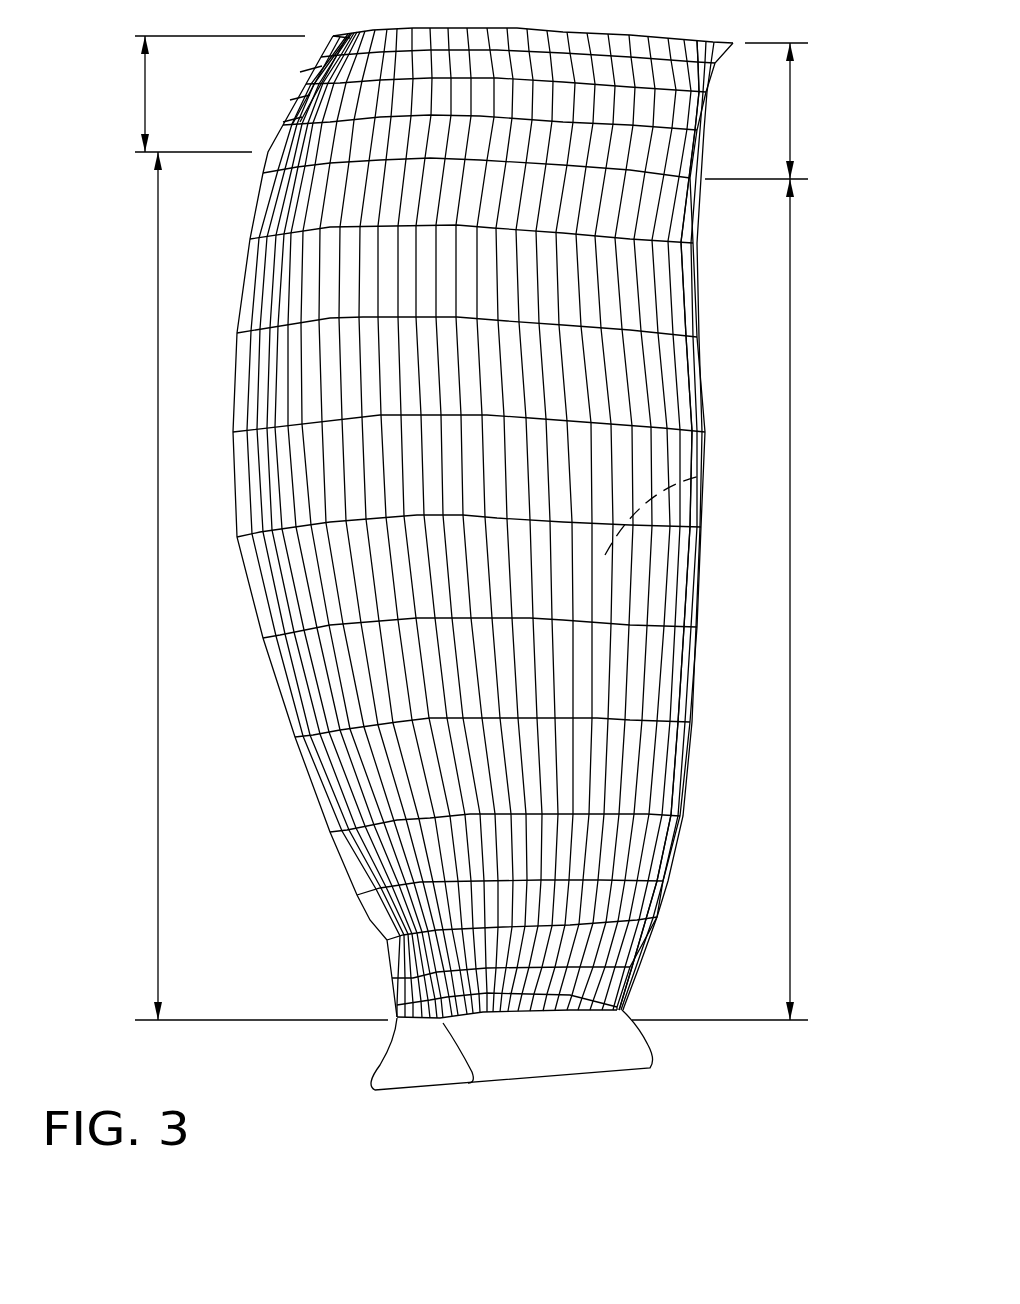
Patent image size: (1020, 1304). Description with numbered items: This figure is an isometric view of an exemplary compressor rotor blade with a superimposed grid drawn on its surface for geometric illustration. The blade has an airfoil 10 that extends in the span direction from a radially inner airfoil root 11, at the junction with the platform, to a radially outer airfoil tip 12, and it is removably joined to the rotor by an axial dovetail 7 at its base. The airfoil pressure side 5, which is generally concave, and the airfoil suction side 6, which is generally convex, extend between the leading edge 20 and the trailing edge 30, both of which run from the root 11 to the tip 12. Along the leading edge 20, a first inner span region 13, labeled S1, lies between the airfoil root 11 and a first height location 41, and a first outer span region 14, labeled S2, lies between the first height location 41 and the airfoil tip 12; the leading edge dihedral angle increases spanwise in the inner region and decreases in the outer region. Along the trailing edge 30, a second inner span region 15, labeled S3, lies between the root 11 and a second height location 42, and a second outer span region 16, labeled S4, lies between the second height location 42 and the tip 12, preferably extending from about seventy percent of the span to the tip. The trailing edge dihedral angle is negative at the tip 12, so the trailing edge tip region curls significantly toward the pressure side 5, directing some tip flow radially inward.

The pressure side 5 is at (665, 745).
The suction side 6 is at (705, 477).
The axial dovetail 7 is at (598, 1052).
The airfoil 10 is at (616, 784).
The airfoil root 11 is at (625, 1010).
The airfoil tip 12 is at (640, 38).
The first inner span region 13 is at (790, 383).
The first outer span region 14 is at (793, 125).
The second inner span region 15 is at (157, 800).
The second outer span region 16 is at (145, 80).
The leading edge 20 is at (705, 380).
The trailing edge 30 is at (262, 658).
The first height location 41 is at (692, 178).
The second height location 42 is at (268, 152).
The first inner span region S1 is at (800, 530).
The first outer span region S2 is at (797, 84).
The second inner span region S3 is at (148, 897).
The second outer span region S4 is at (135, 124).